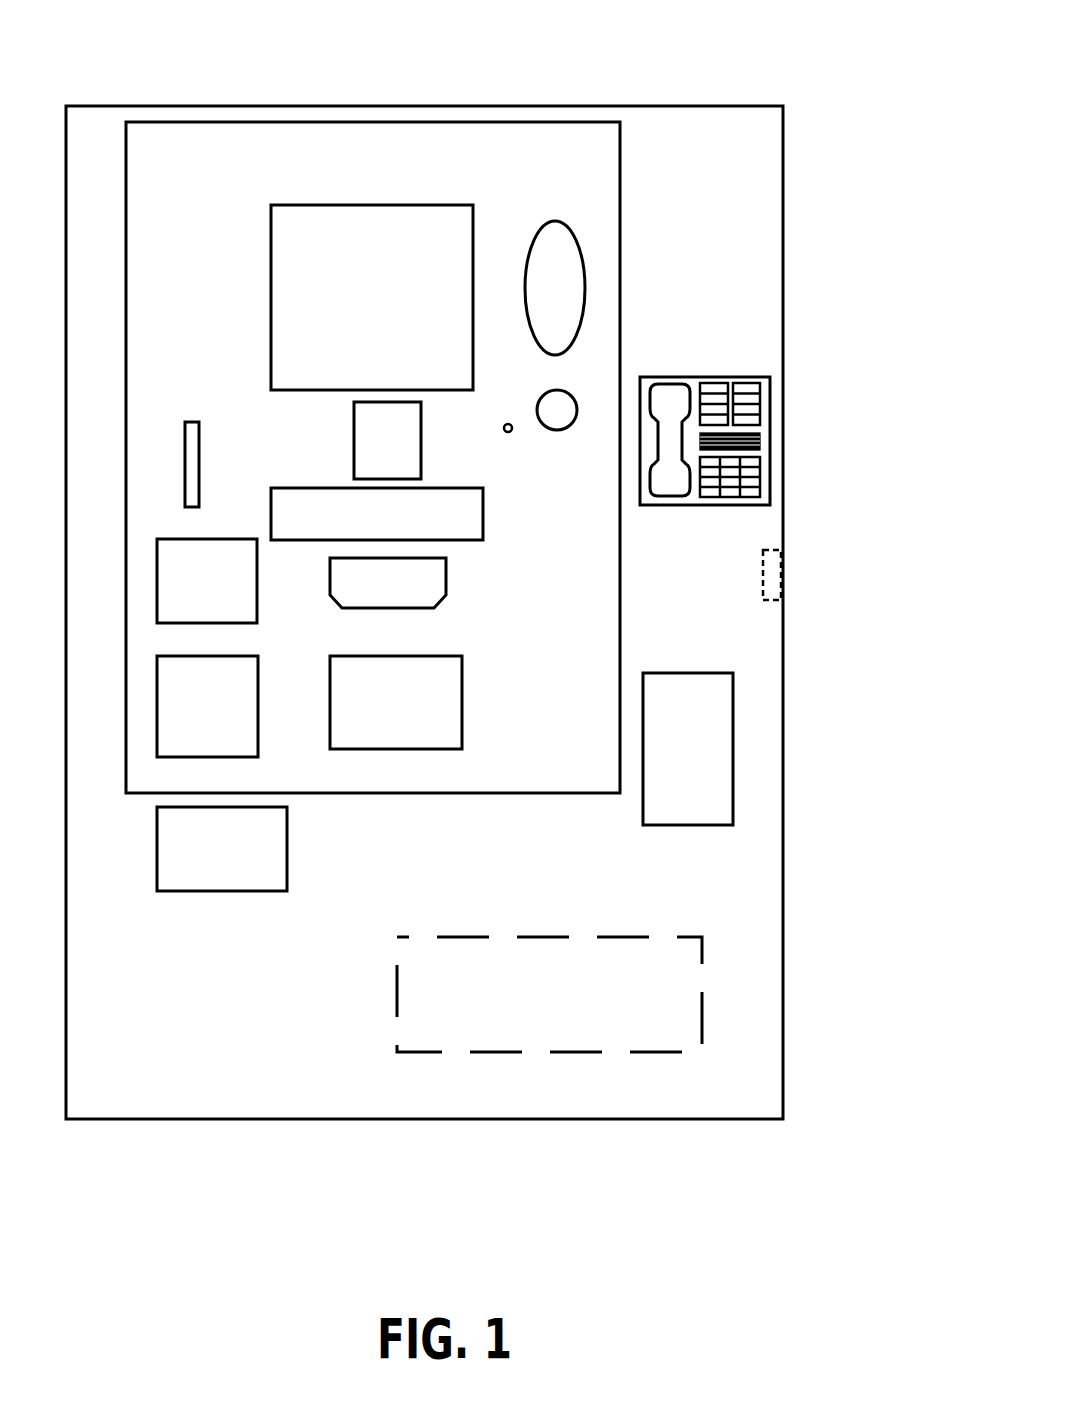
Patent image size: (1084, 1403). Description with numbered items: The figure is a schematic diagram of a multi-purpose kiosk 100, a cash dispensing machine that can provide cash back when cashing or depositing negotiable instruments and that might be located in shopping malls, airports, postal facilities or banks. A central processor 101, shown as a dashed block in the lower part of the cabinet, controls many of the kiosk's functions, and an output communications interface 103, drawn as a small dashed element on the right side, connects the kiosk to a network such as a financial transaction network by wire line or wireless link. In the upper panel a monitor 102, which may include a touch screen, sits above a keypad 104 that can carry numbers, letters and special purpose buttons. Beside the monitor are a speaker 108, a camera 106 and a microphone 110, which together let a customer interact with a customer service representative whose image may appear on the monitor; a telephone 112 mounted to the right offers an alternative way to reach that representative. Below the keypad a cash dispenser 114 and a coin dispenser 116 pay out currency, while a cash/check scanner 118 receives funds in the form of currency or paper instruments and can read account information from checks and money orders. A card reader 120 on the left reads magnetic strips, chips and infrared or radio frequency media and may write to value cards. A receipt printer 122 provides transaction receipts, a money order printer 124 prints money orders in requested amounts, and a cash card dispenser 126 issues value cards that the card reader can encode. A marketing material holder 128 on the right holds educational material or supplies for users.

The kiosk 100 is at (658, 84).
The central processor 101 is at (397, 962).
The monitor 102 is at (320, 205).
The output communications interface 103 is at (763, 572).
The keypad 104 is at (354, 420).
The camera 106 is at (560, 430).
The speaker 108 is at (527, 265).
The microphone 110 is at (509, 432).
The telephone 112 is at (770, 425).
The cash dispenser 114 is at (483, 497).
The coin dispenser 116 is at (446, 583).
The cash/check scanner 118 is at (462, 678).
The card reader 120 is at (184, 448).
The receipt printer 122 is at (257, 577).
The money order printer 124 is at (258, 702).
The cash card dispenser 126 is at (287, 833).
The marketing material holder 128 is at (733, 754).